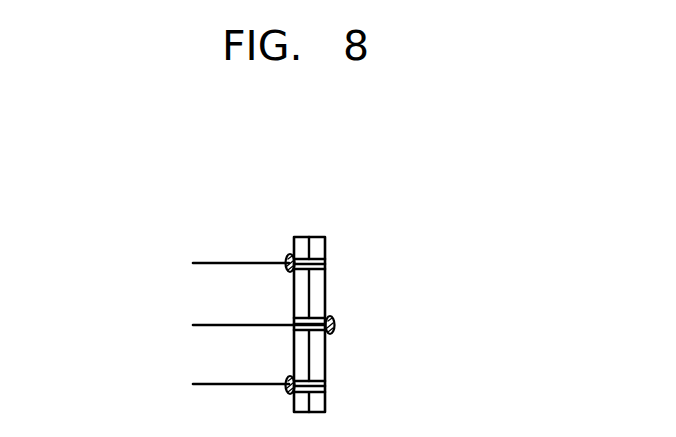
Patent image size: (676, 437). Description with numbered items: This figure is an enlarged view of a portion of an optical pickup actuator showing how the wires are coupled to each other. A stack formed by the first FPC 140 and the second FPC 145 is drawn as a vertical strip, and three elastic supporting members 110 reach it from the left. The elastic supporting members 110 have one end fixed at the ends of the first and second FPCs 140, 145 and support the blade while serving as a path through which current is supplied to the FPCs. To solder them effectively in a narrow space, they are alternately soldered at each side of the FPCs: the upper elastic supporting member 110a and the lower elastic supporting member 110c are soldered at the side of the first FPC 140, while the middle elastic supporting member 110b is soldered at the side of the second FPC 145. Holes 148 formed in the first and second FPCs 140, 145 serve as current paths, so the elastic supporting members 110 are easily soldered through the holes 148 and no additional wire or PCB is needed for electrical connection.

The elastic supporting members 110 is at (181, 326).
The upper elastic supporting member 110a is at (208, 265).
The middle elastic supporting member 110b is at (208, 326).
The lower elastic supporting member 110c is at (191, 387).
The first FPC 140 is at (298, 238).
The second FPC 145 is at (321, 238).
The holes 148 is at (316, 270).